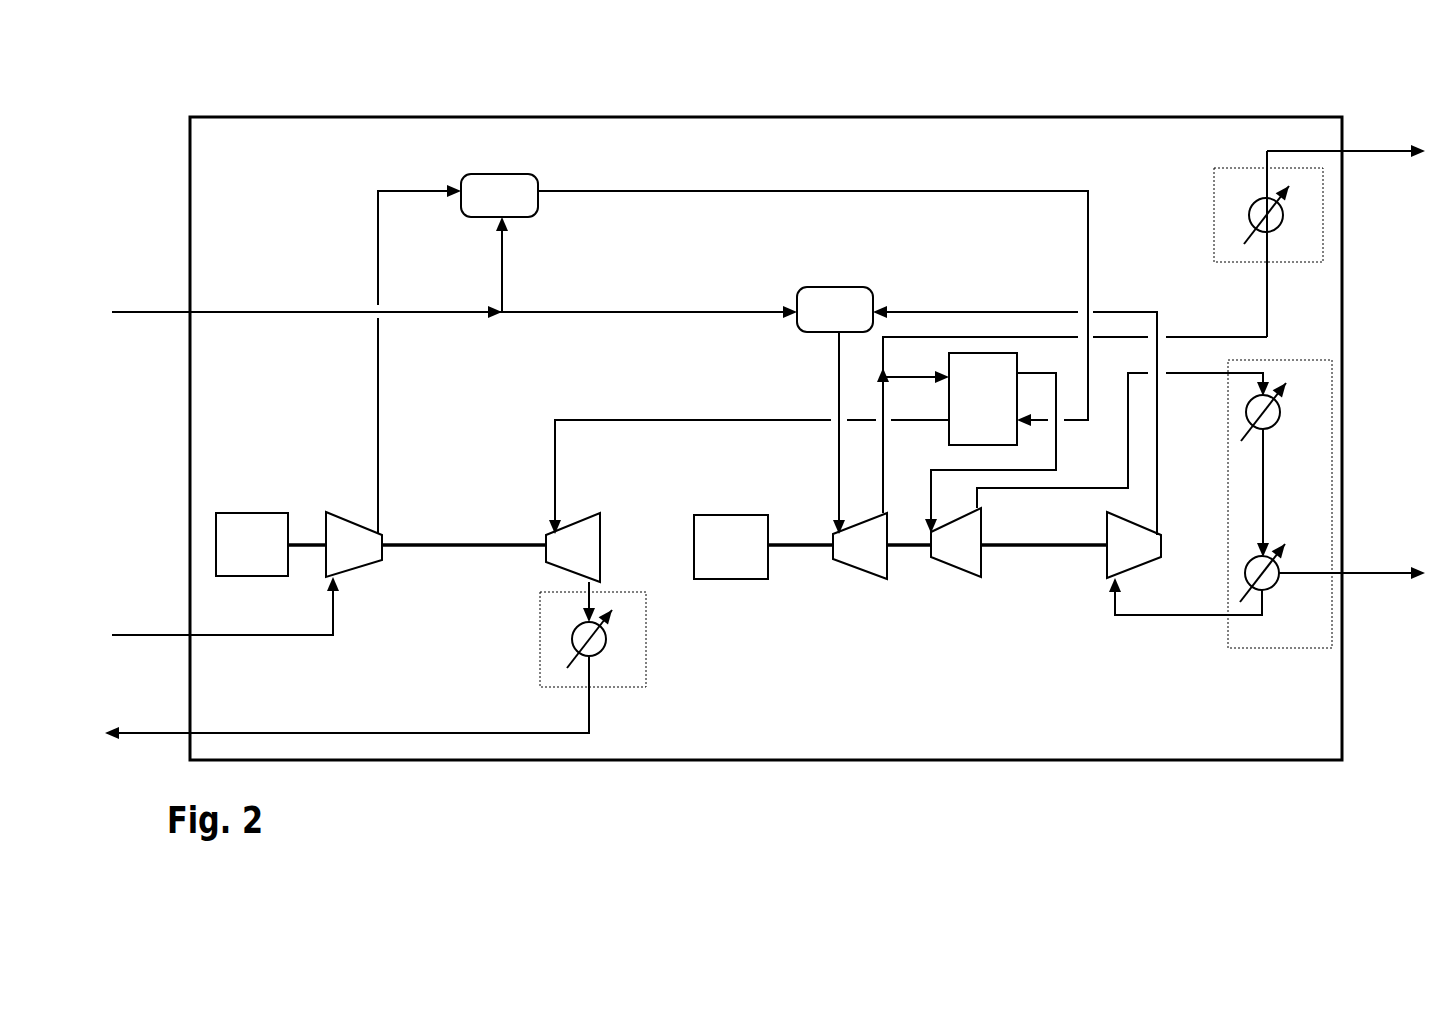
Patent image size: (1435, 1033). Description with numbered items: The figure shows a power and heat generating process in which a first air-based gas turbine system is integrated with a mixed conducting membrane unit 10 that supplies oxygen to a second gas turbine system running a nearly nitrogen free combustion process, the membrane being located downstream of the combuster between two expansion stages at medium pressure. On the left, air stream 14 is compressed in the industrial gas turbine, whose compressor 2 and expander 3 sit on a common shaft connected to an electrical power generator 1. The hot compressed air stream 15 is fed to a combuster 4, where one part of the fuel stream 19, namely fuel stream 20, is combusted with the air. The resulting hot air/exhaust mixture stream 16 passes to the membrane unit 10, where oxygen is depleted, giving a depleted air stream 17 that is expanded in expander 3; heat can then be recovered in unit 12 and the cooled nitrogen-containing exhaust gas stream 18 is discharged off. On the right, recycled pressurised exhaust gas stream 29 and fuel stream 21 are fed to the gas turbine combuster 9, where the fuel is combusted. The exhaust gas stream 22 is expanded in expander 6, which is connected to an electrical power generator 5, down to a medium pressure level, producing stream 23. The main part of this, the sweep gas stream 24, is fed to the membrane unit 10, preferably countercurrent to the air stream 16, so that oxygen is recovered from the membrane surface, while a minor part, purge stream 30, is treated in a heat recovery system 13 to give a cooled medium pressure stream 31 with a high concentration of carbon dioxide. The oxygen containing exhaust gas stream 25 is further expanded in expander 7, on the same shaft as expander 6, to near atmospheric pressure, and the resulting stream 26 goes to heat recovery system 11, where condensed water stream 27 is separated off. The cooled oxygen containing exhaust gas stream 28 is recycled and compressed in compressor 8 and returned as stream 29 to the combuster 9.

The electrical power generator 1 is at (271, 544).
The compressor 2 is at (436, 544).
The expander 3 is at (573, 547).
The combuster 4 is at (499, 195).
The electrical power generator 5 is at (763, 547).
The expander 6 is at (882, 546).
The expander 7 is at (1019, 542).
The compressor 8 is at (1134, 545).
The gas turbine combuster 9 is at (835, 309).
The mixed conducting membrane unit 10 is at (983, 399).
The heat recovery system 11 is at (1280, 504).
The heat recovery unit 12 is at (593, 634).
The heat recovery system 13 is at (1268, 215).
The air stream 14 is at (225, 612).
The hot compressed air stream 15 is at (413, 359).
The hot air/exhaust mixture stream 16 is at (813, 302).
The depleted air stream 17 is at (749, 471).
The cooled nitrogen-containing exhaust gas stream 18 is at (347, 701).
The fuel stream 19 is at (307, 312).
The fuel stream 20 is at (503, 264).
The fuel stream 21 is at (649, 312).
The exhaust gas stream 22 is at (839, 433).
The medium pressure exhaust stream 23 is at (1069, 425).
The sweep gas stream 24 is at (916, 377).
The oxygen containing exhaust gas stream 25 is at (996, 453).
The expanded exhaust stream 26 is at (1123, 440).
The condensed water stream 27 is at (1352, 572).
The cooled oxygen containing exhaust gas stream 28 is at (1185, 603).
The recycled pressurised exhaust gas stream 29 is at (1021, 420).
The purge stream 30 is at (1267, 244).
The cooled medium pressure CO2-rich stream 31 is at (1346, 151).